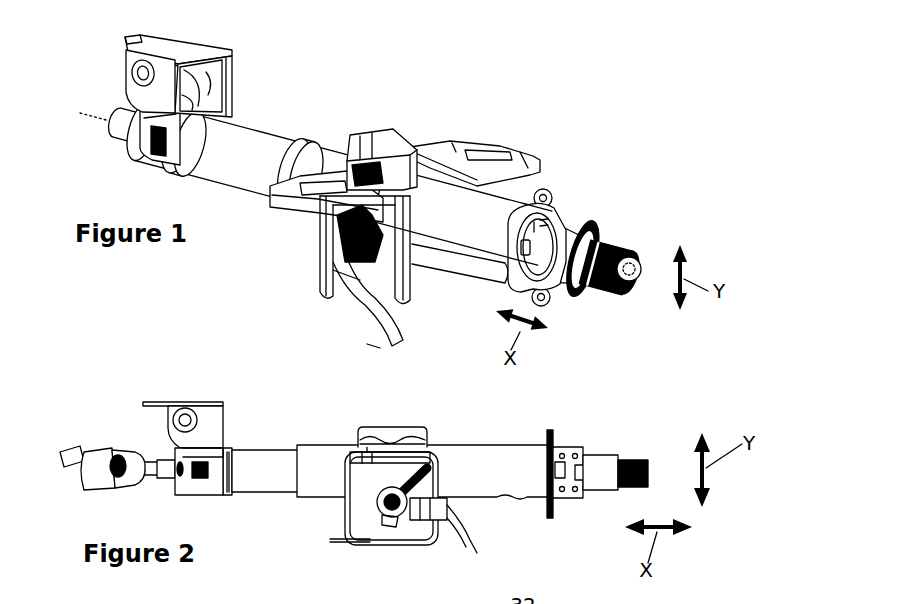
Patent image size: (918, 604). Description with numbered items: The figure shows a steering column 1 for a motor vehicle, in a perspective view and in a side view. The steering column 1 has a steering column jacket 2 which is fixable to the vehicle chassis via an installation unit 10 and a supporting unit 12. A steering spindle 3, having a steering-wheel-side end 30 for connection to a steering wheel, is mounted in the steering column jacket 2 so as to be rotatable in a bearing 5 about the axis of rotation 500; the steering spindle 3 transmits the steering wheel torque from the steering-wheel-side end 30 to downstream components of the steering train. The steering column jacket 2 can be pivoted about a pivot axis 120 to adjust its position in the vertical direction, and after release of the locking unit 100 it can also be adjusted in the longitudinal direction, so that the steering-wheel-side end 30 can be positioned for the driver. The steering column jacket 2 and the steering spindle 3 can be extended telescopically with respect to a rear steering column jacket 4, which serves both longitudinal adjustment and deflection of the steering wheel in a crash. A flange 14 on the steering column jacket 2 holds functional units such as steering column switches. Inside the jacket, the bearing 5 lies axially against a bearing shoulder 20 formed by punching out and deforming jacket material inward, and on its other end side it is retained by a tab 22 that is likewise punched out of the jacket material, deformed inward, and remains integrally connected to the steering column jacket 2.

In FIG. 1, the steering column 1 is at (522, 59).
In FIG. 1, the steering column jacket 2 is at (497, 210).
In FIG. 2, the steering column jacket 2 is at (482, 462).
In FIG. 1, the steering spindle 3 is at (579, 288).
In FIG. 2, the steering spindle 3 is at (601, 465).
In FIG. 1, the rear steering column jacket 4 is at (268, 147).
In FIG. 2, the rear steering column jacket 4 is at (267, 488).
In FIG. 1, the bearing 5 is at (591, 223).
In FIG. 1, the installation unit 10 is at (437, 116).
In FIG. 2, the installation unit 10 is at (388, 419).
In FIG. 1, the supporting unit 12 is at (181, 59).
In FIG. 2, the supporting unit 12 is at (170, 423).
In FIG. 1, the flange 14 is at (573, 194).
In FIG. 1, the bearing shoulder 20 is at (505, 289).
In FIG. 2, the bearing shoulder 20 is at (566, 500).
In FIG. 1, the tab 22 is at (551, 300).
In FIG. 2, the tab 22 is at (573, 491).
In FIG. 1, the steering-wheel-side end 30 is at (626, 252).
In FIG. 2, the steering-wheel-side end 30 is at (648, 467).
In FIG. 1, the locking unit 100 is at (324, 319).
In FIG. 2, the locking unit 100 is at (376, 554).
In FIG. 1, the pivot axis 120 is at (120, 80).
In FIG. 2, the pivot axis 120 is at (164, 390).
In FIG. 1, the axis of rotation 500 is at (650, 277).